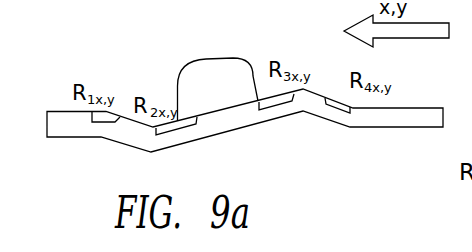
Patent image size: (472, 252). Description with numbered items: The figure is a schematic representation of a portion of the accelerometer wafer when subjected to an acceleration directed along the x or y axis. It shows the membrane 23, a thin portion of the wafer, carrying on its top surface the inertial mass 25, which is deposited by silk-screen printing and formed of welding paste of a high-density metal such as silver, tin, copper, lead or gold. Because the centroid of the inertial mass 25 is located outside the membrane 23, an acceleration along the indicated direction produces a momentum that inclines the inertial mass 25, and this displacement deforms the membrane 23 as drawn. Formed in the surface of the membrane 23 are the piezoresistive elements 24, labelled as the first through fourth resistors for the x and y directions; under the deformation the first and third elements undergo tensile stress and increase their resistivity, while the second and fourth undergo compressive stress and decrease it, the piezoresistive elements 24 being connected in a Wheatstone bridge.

The membrane 23 is at (399, 127).
The piezoresistive elements 24 is at (97, 122).
The inertial mass 25 is at (243, 68).